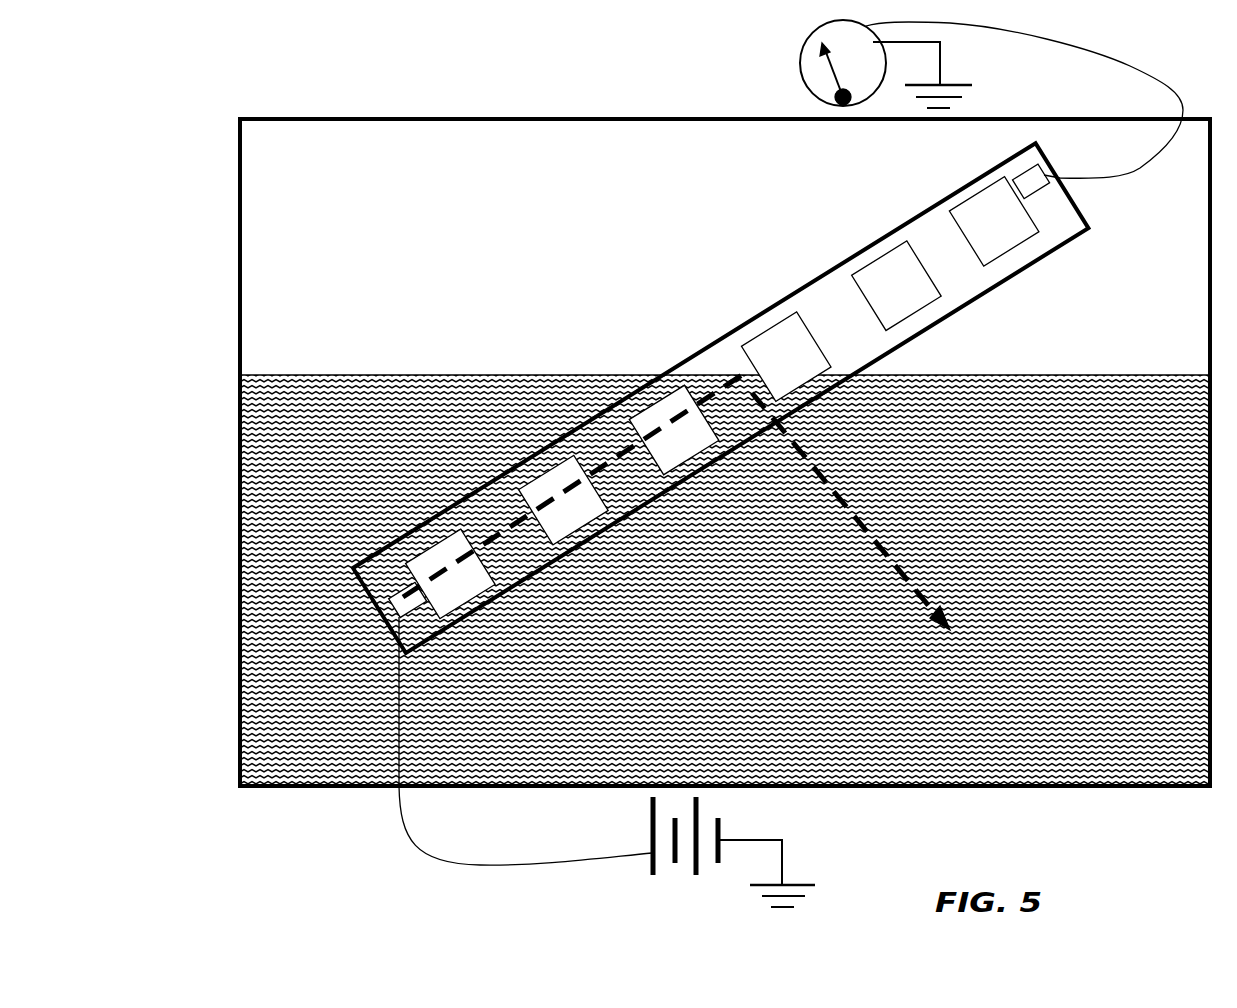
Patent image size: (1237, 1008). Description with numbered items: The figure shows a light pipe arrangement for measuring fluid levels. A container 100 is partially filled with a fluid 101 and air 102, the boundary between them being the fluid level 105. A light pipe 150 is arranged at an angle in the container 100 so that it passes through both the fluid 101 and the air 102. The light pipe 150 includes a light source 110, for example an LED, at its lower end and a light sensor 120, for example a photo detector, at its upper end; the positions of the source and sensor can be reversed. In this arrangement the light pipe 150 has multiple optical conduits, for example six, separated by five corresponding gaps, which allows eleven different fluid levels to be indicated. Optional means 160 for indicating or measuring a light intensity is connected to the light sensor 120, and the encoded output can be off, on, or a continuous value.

The container 100 is at (360, 118).
The fluid 101 is at (653, 614).
The air 102 is at (430, 181).
The fluid level 105 is at (240, 375).
The light source 110 is at (389, 590).
The light sensor 120 is at (1043, 156).
The light pipe 150 is at (737, 323).
The means for indicating or measuring a light intensity 160 is at (807, 28).